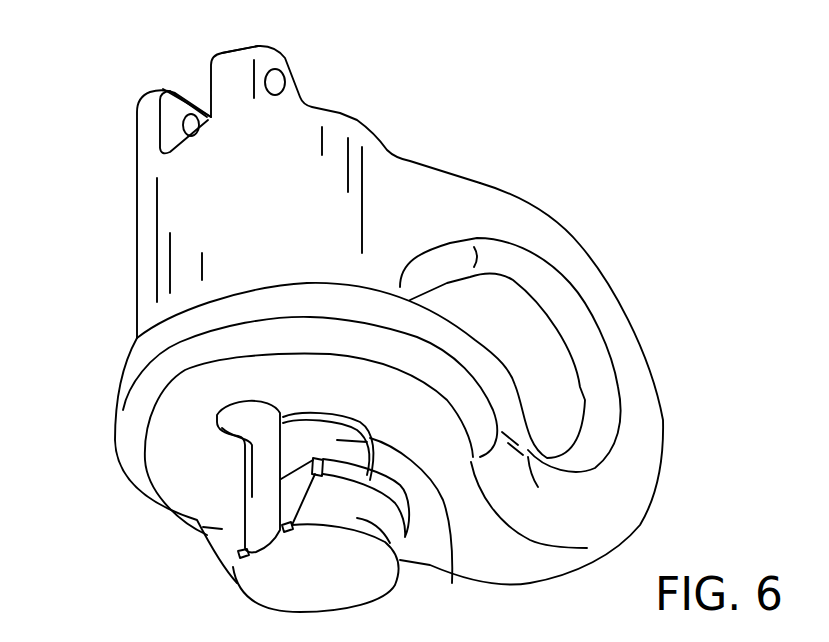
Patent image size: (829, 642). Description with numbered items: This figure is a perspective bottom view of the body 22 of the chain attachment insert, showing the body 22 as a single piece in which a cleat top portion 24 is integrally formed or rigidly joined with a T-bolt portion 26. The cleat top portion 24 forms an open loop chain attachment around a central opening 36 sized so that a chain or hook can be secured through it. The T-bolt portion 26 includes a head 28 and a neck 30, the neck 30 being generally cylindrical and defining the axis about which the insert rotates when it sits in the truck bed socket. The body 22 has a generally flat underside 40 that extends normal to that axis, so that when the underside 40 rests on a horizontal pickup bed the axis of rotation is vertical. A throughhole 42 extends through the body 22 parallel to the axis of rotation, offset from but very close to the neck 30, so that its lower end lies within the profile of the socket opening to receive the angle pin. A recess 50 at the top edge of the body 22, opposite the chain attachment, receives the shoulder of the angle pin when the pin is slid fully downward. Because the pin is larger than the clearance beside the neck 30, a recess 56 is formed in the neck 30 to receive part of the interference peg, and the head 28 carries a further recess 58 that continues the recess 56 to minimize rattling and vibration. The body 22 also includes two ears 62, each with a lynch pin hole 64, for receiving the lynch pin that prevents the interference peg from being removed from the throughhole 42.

The body 22 is at (585, 128).
The cleat top portion 24 is at (173, 193).
The T-bolt portion 26 is at (396, 560).
The head 28 is at (207, 533).
The neck 30 is at (419, 523).
The opening 36 is at (542, 363).
The flat underside 40 is at (165, 450).
The throughhole 42 is at (237, 415).
The recess 50 is at (168, 137).
The recess 56 is at (267, 460).
The recess 58 is at (267, 498).
The ears 62 is at (150, 107).
The lynch pin hole 64 is at (190, 120).